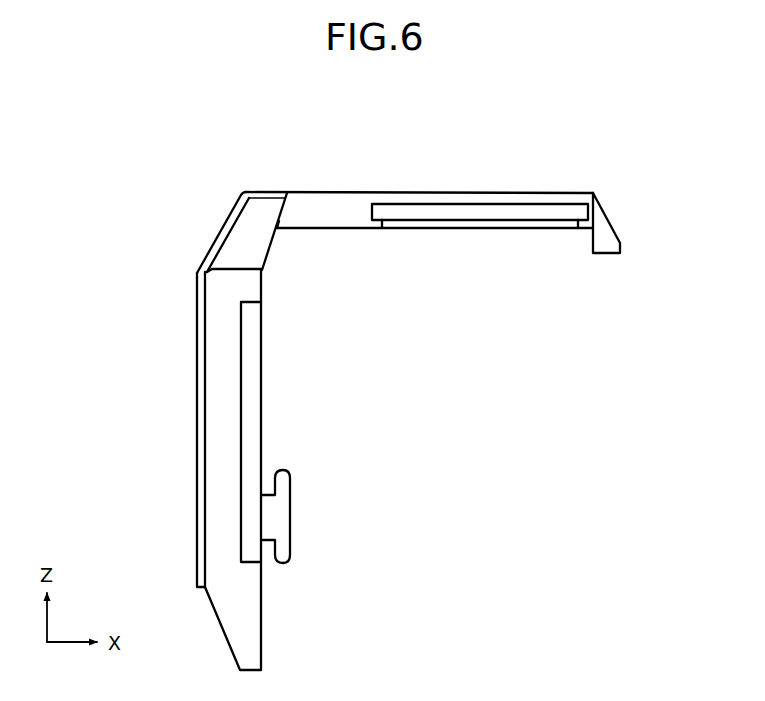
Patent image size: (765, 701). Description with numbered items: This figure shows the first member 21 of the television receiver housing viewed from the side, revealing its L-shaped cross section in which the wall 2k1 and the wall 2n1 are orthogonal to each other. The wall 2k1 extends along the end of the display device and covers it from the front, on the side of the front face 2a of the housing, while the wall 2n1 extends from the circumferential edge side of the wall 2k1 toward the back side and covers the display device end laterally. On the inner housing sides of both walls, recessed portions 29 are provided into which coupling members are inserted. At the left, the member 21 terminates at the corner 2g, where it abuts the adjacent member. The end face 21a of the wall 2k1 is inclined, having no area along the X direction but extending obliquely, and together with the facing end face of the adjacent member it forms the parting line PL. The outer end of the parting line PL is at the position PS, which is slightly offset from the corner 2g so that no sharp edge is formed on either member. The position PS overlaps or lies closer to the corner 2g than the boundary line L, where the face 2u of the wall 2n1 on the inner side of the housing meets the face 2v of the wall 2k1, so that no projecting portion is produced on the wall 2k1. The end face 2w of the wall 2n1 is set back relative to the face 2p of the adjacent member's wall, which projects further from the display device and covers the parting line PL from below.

The member 21 is at (667, 170).
The face 2a is at (310, 192).
The wall 2k1 is at (546, 193).
The end face 21a is at (362, 200).
The face 2v is at (365, 229).
The recessed portion 29 is at (514, 213).
The parting line PL is at (277, 212).
The boundary line L is at (280, 231).
The position PS is at (263, 271).
The corner 2g is at (198, 272).
The face 2p is at (197, 327).
The wall 2n1 is at (215, 461).
The end face 2w is at (217, 521).
The face 2u is at (262, 635).